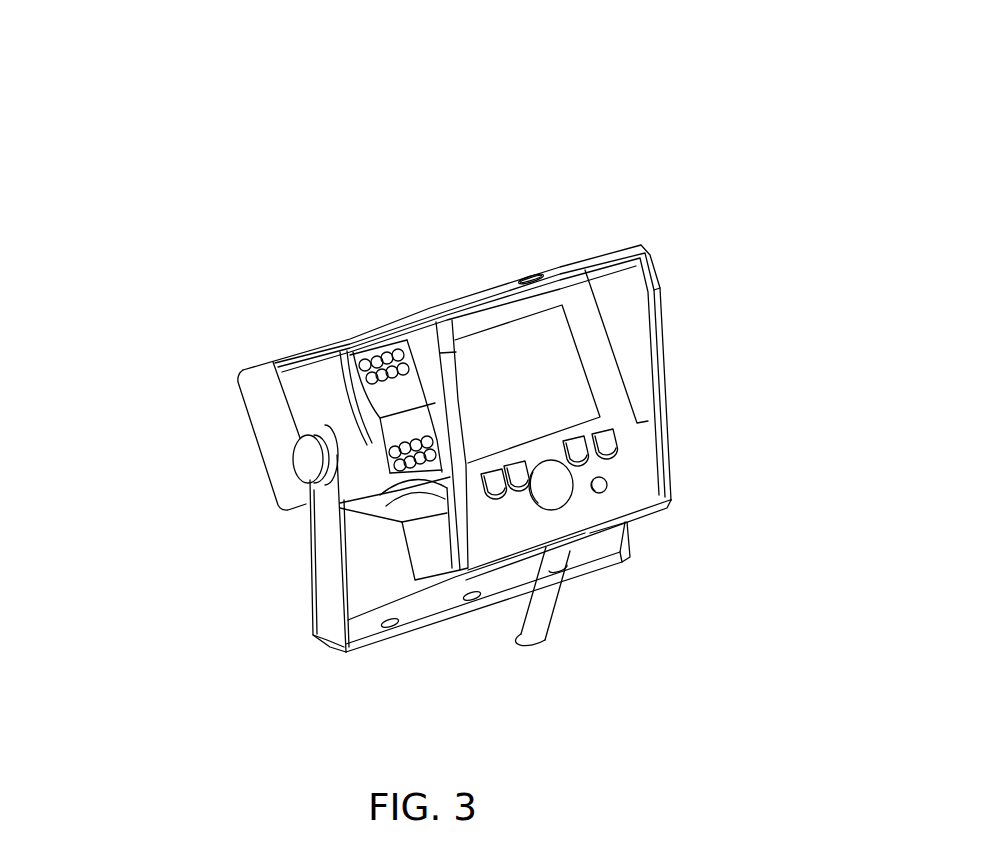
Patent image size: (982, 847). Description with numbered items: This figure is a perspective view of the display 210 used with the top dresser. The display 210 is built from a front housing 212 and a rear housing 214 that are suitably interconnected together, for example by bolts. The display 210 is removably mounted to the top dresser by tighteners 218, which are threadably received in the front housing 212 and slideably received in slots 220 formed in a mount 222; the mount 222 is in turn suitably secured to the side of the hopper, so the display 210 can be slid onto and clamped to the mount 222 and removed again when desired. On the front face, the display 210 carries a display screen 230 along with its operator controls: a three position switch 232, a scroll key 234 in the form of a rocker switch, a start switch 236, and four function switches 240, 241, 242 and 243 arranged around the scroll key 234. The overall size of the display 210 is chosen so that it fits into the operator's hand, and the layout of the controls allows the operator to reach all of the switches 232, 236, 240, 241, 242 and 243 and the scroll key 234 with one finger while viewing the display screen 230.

The display 210 is at (418, 146).
The front housing 212 is at (305, 383).
The rear housing 214 is at (268, 405).
The tighteners 218 is at (300, 455).
The slots 220 is at (338, 462).
The mount 222 is at (327, 645).
The display screen 230 is at (545, 352).
The three position switch 232 is at (395, 375).
The scroll key 234 is at (575, 488).
The start switch 236 is at (607, 482).
The function switch 240 is at (493, 488).
The function switch 241 is at (518, 482).
The function switch 242 is at (575, 452).
The function switch 243 is at (605, 445).